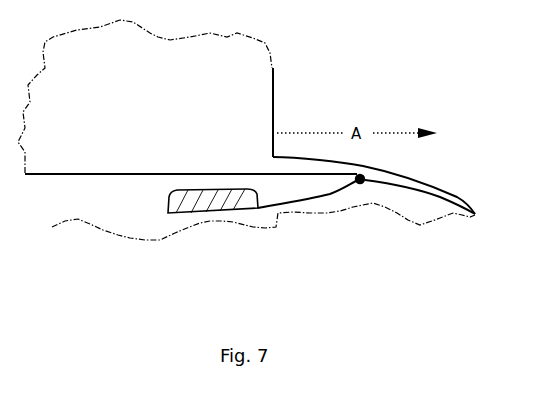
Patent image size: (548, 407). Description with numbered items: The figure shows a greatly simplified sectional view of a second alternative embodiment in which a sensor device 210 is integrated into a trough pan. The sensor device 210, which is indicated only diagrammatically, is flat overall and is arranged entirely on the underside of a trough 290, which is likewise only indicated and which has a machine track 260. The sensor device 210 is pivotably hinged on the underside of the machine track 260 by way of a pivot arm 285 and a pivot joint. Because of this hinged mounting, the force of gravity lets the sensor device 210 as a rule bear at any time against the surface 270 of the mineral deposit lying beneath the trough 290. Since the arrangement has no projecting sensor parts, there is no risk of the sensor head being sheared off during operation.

The sensor device 210 is at (194, 183).
The machine track 260 is at (409, 179).
The surface of the mineral deposit 270 is at (110, 231).
The pivot arm 285 is at (328, 198).
The trough 290 is at (277, 86).